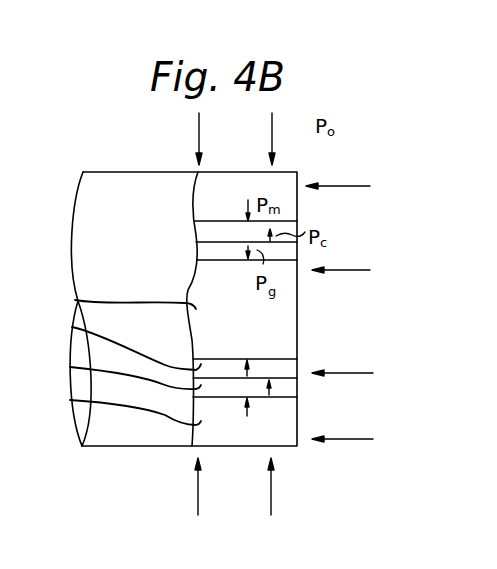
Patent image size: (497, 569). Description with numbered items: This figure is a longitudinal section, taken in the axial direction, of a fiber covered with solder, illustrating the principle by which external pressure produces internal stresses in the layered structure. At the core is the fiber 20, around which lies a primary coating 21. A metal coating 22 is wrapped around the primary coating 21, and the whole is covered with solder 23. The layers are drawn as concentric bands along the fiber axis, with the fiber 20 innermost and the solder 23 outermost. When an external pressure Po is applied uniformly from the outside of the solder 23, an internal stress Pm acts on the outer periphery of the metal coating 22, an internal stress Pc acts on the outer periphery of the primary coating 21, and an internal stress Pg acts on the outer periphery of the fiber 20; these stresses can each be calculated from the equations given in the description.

The fiber 20 is at (75, 300).
The primary coating 21 is at (72, 327).
The metal coating 22 is at (70, 367).
The solder 23 is at (70, 400).